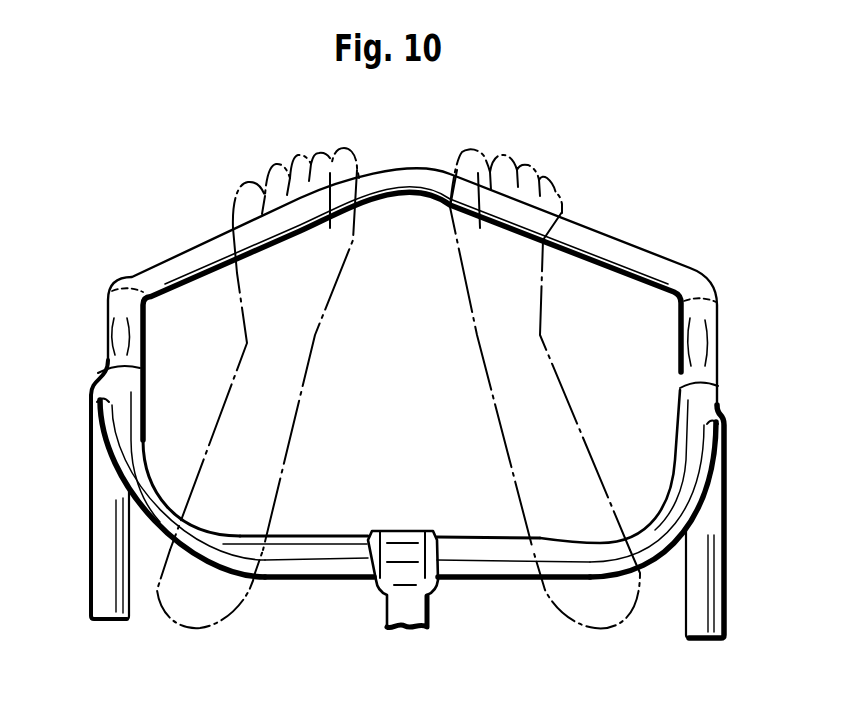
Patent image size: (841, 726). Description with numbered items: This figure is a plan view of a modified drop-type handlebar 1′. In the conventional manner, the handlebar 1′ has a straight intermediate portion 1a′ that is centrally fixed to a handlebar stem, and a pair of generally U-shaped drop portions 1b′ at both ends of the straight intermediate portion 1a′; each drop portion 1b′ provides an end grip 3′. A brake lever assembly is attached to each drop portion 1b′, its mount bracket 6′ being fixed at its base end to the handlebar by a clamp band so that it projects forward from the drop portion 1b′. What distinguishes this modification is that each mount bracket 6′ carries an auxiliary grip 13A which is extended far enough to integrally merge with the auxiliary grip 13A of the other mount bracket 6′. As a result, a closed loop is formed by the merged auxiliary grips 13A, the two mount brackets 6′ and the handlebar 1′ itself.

The auxiliary grip 13A is at (188, 254).
The mount bracket 6′ is at (104, 330).
The end grip 3′ is at (86, 553).
The drop portion 1b′ is at (89, 460).
The straight intermediate portion 1a′ is at (510, 588).
The drop-type handlebar 1′ is at (465, 588).